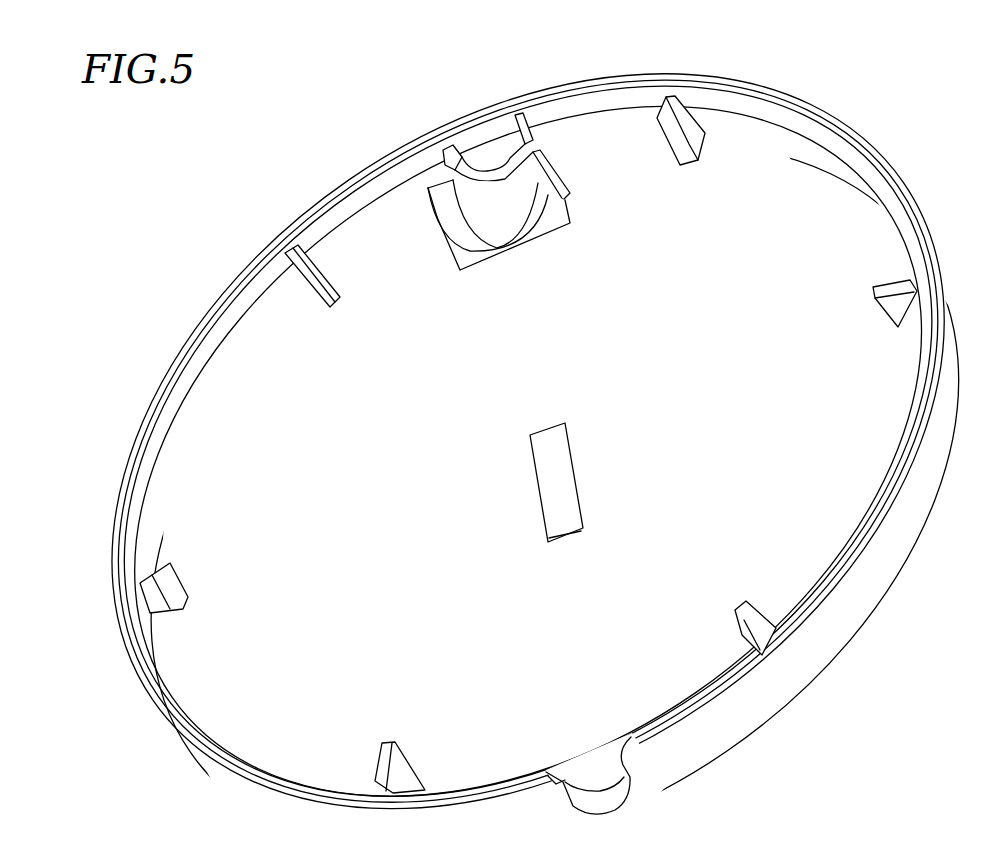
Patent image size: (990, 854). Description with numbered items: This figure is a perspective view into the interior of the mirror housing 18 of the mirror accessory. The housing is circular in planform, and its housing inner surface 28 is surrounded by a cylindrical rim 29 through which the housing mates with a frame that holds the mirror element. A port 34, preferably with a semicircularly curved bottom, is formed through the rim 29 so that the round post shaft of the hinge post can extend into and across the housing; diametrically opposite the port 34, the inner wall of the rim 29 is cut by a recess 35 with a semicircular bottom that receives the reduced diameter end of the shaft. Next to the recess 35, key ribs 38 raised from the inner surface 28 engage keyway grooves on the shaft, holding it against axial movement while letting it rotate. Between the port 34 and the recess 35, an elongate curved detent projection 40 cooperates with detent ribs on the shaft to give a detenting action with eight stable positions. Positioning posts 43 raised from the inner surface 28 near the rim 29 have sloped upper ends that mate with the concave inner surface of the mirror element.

The mirror housing 18 is at (215, 273).
The housing inner surface 28 is at (385, 499).
The cylindrical rim 29 is at (745, 707).
The port 34 is at (570, 793).
The recess 35 is at (521, 210).
The key ribs 38 is at (547, 160).
The detent projection 40 is at (558, 467).
The positioning posts 43 is at (690, 138).